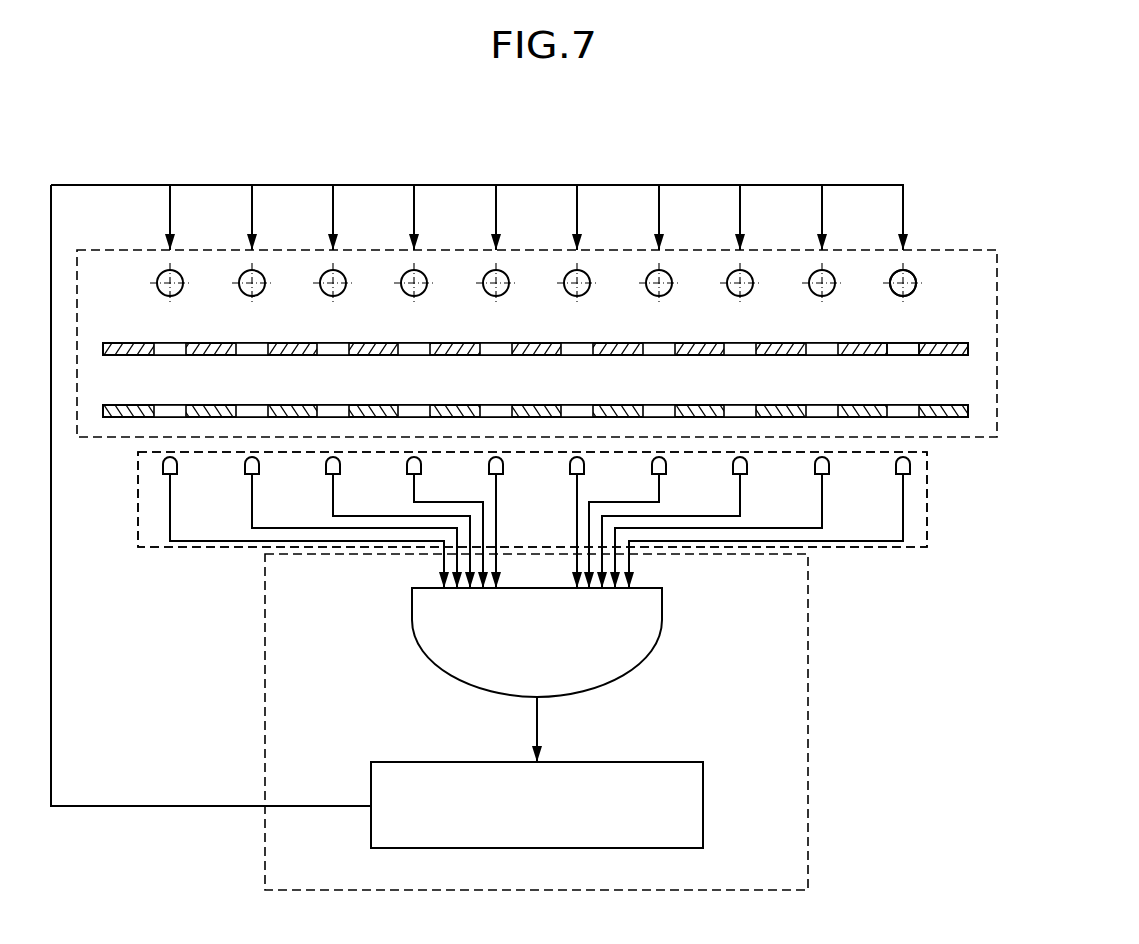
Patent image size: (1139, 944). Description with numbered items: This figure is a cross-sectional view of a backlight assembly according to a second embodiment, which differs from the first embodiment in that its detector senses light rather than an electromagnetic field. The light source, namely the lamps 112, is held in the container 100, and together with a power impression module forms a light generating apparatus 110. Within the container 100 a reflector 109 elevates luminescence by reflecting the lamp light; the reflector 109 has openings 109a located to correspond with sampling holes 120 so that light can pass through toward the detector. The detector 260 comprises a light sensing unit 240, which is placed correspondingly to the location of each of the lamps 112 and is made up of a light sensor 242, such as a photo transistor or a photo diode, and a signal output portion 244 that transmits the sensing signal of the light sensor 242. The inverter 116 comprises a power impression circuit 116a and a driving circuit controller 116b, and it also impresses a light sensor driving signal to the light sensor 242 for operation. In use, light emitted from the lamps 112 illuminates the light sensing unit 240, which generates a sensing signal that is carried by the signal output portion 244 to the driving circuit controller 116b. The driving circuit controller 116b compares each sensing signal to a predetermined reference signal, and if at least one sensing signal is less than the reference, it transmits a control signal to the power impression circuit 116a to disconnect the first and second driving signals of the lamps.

The container 100 is at (998, 423).
The light generating apparatus 110 is at (917, 268).
The lamps 112 is at (916, 292).
The reflector 109 is at (945, 343).
The openings 109a is at (905, 348).
The sampling holes 120 is at (905, 410).
The light sensing unit 240 is at (597, 530).
The light sensor 242 is at (908, 478).
The signal output portion 244 is at (862, 545).
The detector 260 is at (155, 548).
The inverter 116 is at (586, 722).
The power impression circuit 116a is at (676, 762).
The driving circuit controller 116b is at (663, 620).